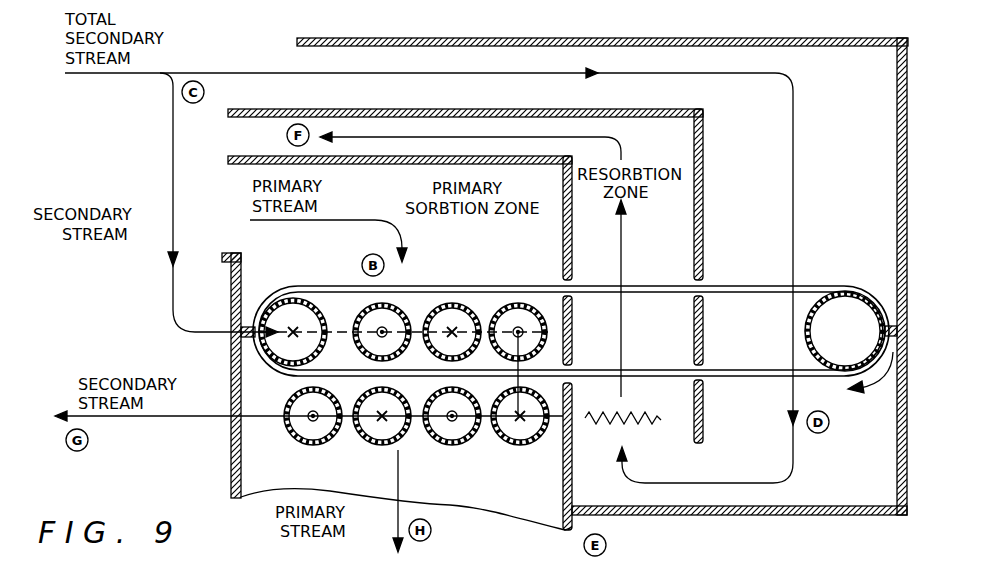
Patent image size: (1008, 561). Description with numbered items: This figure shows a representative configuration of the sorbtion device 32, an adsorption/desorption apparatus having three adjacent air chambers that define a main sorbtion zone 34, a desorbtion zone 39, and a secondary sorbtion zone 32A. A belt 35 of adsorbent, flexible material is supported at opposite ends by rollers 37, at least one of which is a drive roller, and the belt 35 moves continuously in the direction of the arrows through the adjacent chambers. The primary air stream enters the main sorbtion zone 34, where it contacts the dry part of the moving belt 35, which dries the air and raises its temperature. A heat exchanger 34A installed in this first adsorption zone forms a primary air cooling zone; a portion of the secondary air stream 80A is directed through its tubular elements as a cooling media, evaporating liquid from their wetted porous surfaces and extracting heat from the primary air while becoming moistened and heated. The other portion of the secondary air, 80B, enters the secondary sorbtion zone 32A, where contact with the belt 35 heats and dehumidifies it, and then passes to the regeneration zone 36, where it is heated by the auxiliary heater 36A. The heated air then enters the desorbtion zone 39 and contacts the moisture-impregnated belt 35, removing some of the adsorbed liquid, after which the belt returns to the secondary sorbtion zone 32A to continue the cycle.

The sorbtion device 32 is at (278, 58).
The secondary sorbtion zone 32A is at (868, 102).
The main sorbtion zone 34 is at (465, 244).
The heat exchanger 34A is at (352, 438).
The belt 35 is at (505, 285).
The regeneration zone 36 is at (660, 397).
The heater 36A is at (640, 425).
The rollers 37 is at (328, 318).
The desorbtion zone 39 is at (665, 260).
The secondary air portion 80A is at (173, 143).
The secondary air portion 80B is at (376, 73).